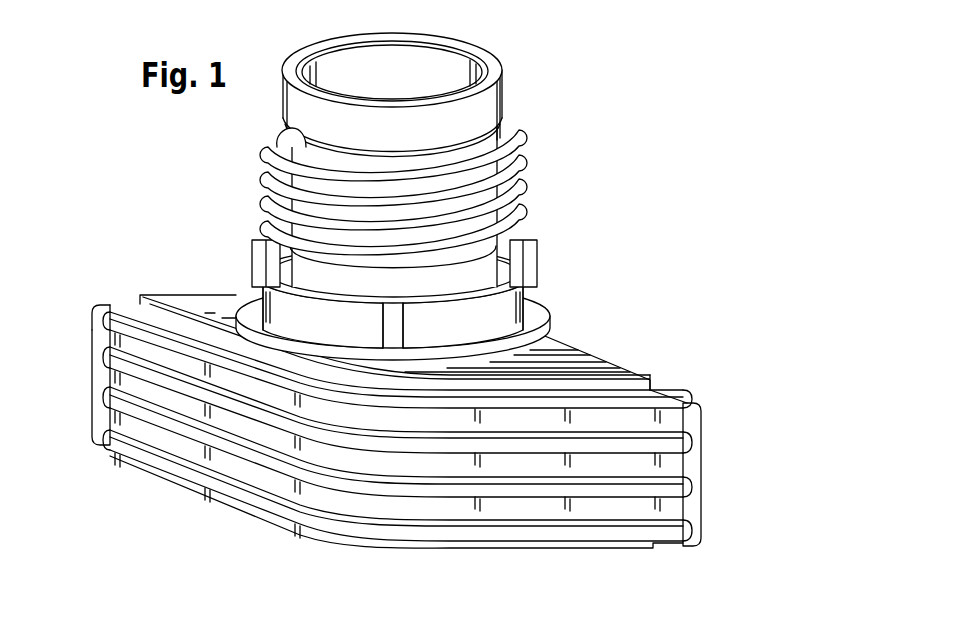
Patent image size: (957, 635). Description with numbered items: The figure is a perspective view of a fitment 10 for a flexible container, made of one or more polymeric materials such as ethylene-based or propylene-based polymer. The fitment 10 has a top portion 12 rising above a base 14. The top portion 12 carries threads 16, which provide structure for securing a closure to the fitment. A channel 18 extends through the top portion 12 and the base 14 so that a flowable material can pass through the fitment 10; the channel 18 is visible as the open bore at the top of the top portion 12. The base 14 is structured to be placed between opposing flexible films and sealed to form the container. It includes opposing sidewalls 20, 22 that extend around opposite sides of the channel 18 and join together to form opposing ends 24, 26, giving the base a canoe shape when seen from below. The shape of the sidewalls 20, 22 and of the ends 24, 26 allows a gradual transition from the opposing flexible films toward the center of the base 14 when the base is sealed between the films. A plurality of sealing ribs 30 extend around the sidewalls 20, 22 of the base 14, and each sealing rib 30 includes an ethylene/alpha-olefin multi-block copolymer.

The fitment 10 is at (558, 58).
The top portion 12 is at (553, 160).
The base 14 is at (672, 356).
The threads 16 is at (266, 150).
The channel 18 is at (420, 58).
The sidewall 20 is at (123, 308).
The sidewall 22 is at (190, 292).
The end 24 is at (66, 408).
The end 26 is at (731, 488).
The sealing rib 30 is at (573, 400).